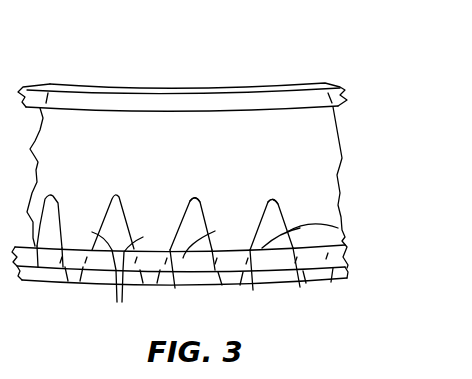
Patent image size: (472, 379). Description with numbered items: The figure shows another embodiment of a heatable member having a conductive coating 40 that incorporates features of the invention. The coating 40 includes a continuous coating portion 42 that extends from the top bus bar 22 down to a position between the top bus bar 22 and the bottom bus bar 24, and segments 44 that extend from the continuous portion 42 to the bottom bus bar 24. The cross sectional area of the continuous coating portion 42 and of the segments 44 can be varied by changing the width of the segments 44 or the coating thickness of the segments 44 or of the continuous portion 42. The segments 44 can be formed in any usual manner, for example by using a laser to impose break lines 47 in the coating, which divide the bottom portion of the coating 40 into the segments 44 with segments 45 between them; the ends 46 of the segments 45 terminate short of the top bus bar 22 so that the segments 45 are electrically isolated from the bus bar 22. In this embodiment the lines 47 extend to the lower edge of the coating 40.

The top bus bar 22 is at (265, 93).
The bottom bus bar 24 is at (334, 280).
The conductive coating 40 is at (349, 138).
The continuous coating portion 42 is at (338, 166).
The segments 44 is at (183, 258).
The segments 45 is at (265, 218).
The ends 46 is at (195, 195).
The break lines 47 is at (262, 248).